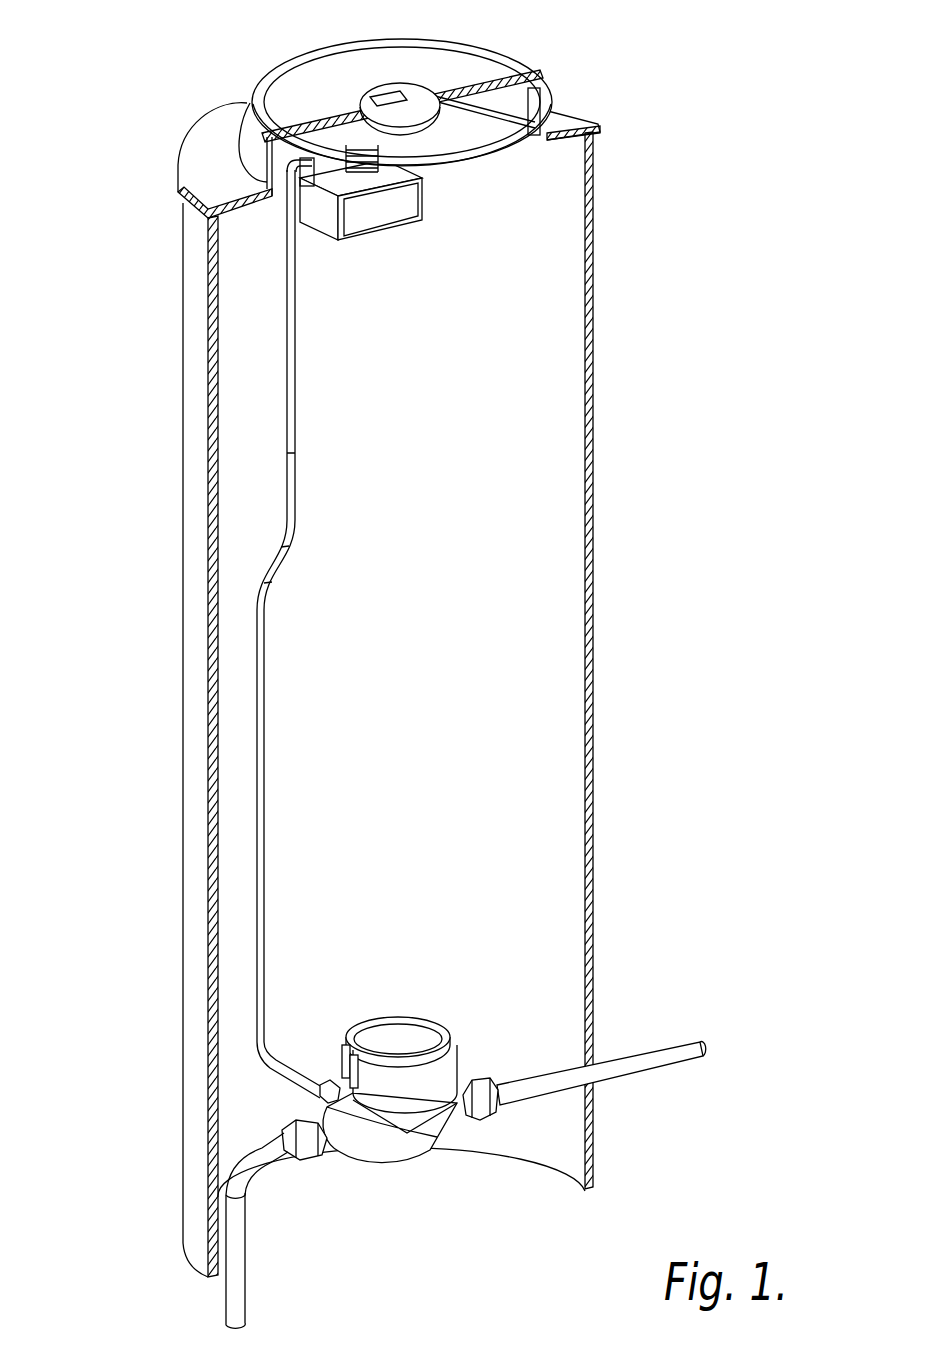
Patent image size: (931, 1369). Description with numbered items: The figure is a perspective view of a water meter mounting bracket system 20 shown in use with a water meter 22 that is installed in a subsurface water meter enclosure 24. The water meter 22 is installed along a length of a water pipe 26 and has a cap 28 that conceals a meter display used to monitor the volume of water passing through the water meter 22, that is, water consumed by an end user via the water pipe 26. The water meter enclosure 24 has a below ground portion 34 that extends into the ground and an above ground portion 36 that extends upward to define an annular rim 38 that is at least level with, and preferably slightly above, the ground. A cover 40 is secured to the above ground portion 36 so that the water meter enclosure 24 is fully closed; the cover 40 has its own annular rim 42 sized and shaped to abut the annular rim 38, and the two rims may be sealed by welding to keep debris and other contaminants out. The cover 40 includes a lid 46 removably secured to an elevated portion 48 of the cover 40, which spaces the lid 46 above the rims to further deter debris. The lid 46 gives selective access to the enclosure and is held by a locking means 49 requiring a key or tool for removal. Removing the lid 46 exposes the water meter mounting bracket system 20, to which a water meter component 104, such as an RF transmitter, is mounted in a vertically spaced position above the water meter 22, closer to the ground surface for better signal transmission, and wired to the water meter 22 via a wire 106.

The water meter mounting bracket system 20 is at (410, 248).
The water meter 22 is at (466, 1145).
The water meter enclosure 24 is at (435, 704).
The water pipe 26 is at (558, 1082).
The cap 28 is at (387, 1030).
The below ground portion 34 is at (595, 388).
The above ground portion 36 is at (572, 122).
The annular rim 38 is at (183, 200).
The cover 40 is at (180, 169).
The annular rim 42 is at (178, 190).
The lid 46 is at (404, 89).
The elevated portion 48 is at (257, 143).
The locking means 49 is at (394, 90).
The water meter component 104 is at (355, 238).
The wire 106 is at (288, 513).